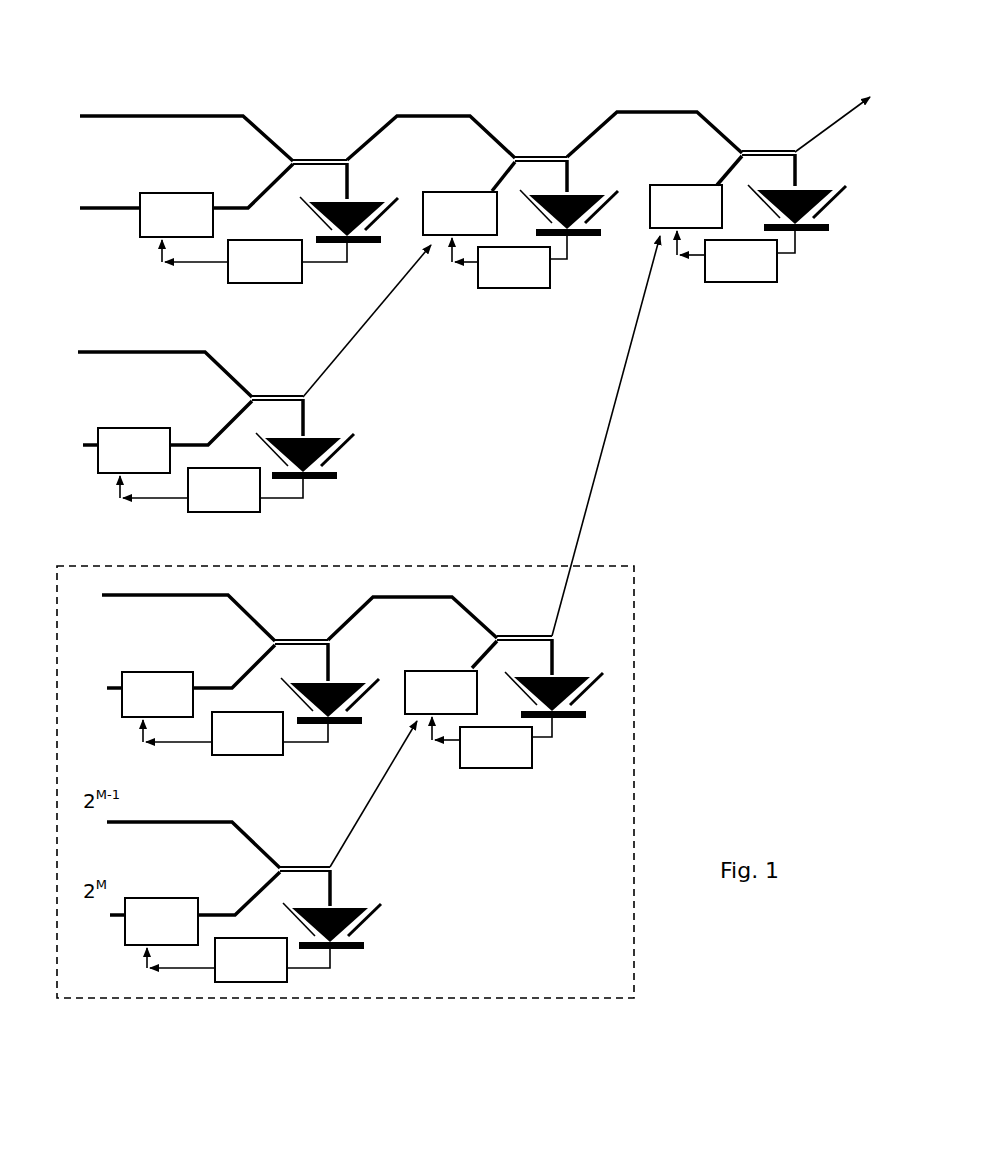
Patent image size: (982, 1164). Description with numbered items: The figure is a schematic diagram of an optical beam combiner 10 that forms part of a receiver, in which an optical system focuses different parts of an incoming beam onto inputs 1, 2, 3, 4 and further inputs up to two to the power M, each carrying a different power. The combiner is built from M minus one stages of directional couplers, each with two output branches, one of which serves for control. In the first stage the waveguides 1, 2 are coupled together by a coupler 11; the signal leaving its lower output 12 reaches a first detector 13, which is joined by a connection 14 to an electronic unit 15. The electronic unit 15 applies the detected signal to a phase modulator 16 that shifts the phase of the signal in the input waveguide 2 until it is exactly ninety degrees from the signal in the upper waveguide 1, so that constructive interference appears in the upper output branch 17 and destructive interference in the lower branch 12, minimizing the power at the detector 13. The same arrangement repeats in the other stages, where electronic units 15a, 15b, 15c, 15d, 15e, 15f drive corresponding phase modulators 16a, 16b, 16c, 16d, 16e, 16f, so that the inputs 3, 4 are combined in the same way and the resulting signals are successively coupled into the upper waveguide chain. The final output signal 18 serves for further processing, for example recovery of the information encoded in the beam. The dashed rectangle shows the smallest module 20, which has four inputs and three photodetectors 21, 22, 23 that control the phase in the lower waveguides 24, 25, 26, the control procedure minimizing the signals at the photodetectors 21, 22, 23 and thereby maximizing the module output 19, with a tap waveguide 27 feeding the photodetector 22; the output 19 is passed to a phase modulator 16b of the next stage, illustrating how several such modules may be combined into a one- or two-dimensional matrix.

The input waveguide 1 is at (186, 123).
The input waveguide 2 is at (186, 188).
The input waveguide 3 is at (165, 359).
The input waveguide 4 is at (160, 423).
The combiner 10 is at (655, 61).
The coupler 11 is at (320, 147).
The output 12 is at (362, 181).
The first detector 13 is at (347, 214).
The electrical connection 14 is at (324, 269).
The electronic unit 15 is at (265, 261).
The controller 15a is at (514, 267).
The controller 15b is at (741, 261).
The controller 15c is at (224, 490).
The controller 15d is at (247, 733).
The controller 15e is at (496, 747).
The controller 15f is at (251, 960).
The phase modulator 16 is at (176, 215).
The phase shifter 16a is at (460, 213).
The phase shifter 16b is at (686, 206).
The phase shifter 16c is at (134, 450).
The phase shifter 16d is at (157, 694).
The phase shifter 16e is at (441, 692).
The phase shifter 16f is at (161, 921).
The upper output branch 17 is at (431, 132).
The output signal 18 is at (832, 121).
The output 19 is at (601, 436).
The smallest module 20 is at (345, 782).
The photodetector 21 is at (335, 701).
The photodetector 22 is at (346, 926).
The photodetector 23 is at (554, 695).
The lower waveguide 24 is at (234, 666).
The lower waveguide 25 is at (239, 893).
The lower waveguide 26 is at (473, 655).
The tap waveguide 27 is at (348, 887).